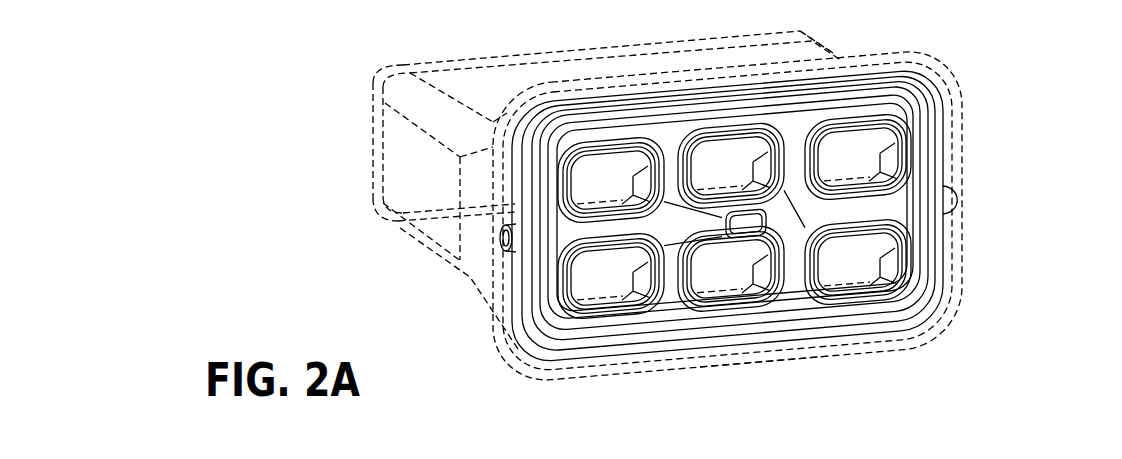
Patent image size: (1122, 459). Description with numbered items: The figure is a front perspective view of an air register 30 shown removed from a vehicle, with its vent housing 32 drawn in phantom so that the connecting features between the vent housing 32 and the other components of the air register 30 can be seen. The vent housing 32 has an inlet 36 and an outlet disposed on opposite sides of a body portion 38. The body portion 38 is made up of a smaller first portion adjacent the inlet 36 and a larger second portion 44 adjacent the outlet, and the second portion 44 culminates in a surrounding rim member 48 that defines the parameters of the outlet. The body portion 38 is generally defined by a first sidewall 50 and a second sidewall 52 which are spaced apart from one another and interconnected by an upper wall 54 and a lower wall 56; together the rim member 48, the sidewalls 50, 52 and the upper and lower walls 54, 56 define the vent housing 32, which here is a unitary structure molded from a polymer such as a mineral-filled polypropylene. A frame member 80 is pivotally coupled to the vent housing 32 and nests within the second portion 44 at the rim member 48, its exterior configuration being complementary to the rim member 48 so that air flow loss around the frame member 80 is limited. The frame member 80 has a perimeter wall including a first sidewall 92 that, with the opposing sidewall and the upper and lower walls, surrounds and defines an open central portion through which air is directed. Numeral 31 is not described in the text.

The air register 30 is at (975, 60).
The outer lens flange 31 is at (962, 346).
The vent housing 32 is at (866, 46).
The inlet 36 is at (372, 64).
The body portion 38 is at (453, 252).
The second portion 44 is at (478, 266).
The rim member 48 is at (963, 130).
The first sidewall 50 is at (400, 213).
The second sidewall 52 is at (965, 205).
The upper wall 54 is at (606, 57).
The lower wall 56 is at (762, 364).
The frame member 80 is at (960, 271).
The first sidewall 92 is at (412, 160).